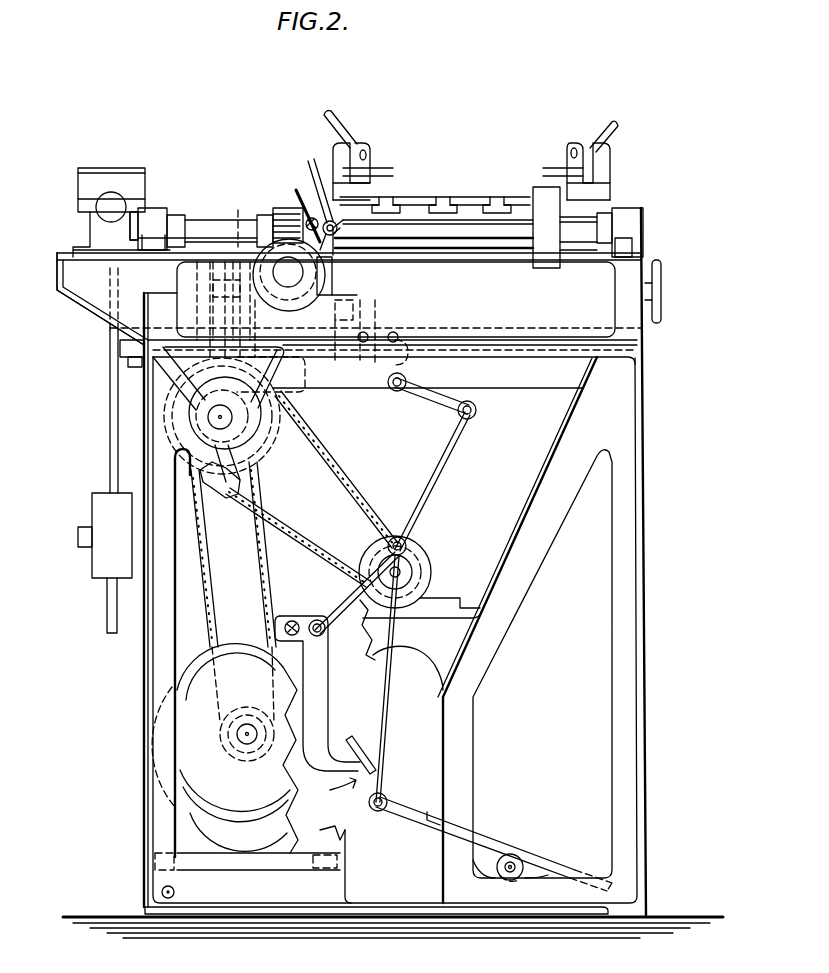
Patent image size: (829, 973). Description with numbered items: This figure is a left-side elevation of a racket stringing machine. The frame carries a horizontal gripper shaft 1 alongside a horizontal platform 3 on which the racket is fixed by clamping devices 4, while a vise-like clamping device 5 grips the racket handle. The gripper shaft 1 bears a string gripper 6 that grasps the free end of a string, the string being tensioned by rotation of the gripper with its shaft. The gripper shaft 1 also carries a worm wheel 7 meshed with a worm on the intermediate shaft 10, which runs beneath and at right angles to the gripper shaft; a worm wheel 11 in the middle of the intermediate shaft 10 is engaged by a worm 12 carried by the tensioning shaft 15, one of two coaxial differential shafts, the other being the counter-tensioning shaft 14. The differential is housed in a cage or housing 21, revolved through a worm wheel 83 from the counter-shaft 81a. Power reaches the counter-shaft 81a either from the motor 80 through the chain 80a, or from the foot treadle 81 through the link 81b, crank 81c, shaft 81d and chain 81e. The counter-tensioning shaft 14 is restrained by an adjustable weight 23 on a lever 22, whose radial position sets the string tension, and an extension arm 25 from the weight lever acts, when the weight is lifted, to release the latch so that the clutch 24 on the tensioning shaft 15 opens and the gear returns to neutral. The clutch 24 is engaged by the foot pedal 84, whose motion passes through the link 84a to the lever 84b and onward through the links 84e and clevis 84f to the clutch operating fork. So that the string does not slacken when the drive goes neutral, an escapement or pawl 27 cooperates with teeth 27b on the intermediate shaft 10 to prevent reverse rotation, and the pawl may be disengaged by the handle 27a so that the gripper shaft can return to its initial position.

The gripper shaft 1 is at (206, 230).
The horizontal platform 3 is at (433, 208).
The clamping device 4 is at (352, 140).
The clamping device 5 is at (124, 170).
The string gripper 6 is at (547, 260).
The worm wheel 7 is at (277, 208).
The intermediate shaft 10 is at (289, 275).
The worm wheel 11 is at (238, 217).
The worm 12 is at (224, 417).
The counter-tensioning shaft 14 is at (157, 331).
The tensioning shaft 15 is at (487, 327).
The cage or housing 21 is at (193, 302).
The lever 22 is at (108, 463).
The adjustable weight 23 is at (93, 571).
The clutch 24 is at (266, 329).
The extension arm 25 is at (100, 312).
The escapement or pawl 27 is at (297, 190).
The handle 27a is at (313, 158).
The teeth 27b is at (335, 273).
The motor 80 is at (225, 748).
The chain 80a is at (205, 630).
The foot treadle 81 is at (515, 846).
The counter-shaft 81a is at (336, 469).
The link 81b is at (392, 742).
The crank 81c is at (410, 548).
The shaft 81d is at (412, 572).
The chain 81e is at (355, 479).
The worm wheel 83 is at (232, 294).
The foot pedal 84 is at (344, 789).
The link 84a is at (445, 468).
The lever 84b is at (428, 412).
The links 84e is at (400, 323).
The clevis 84f is at (353, 313).